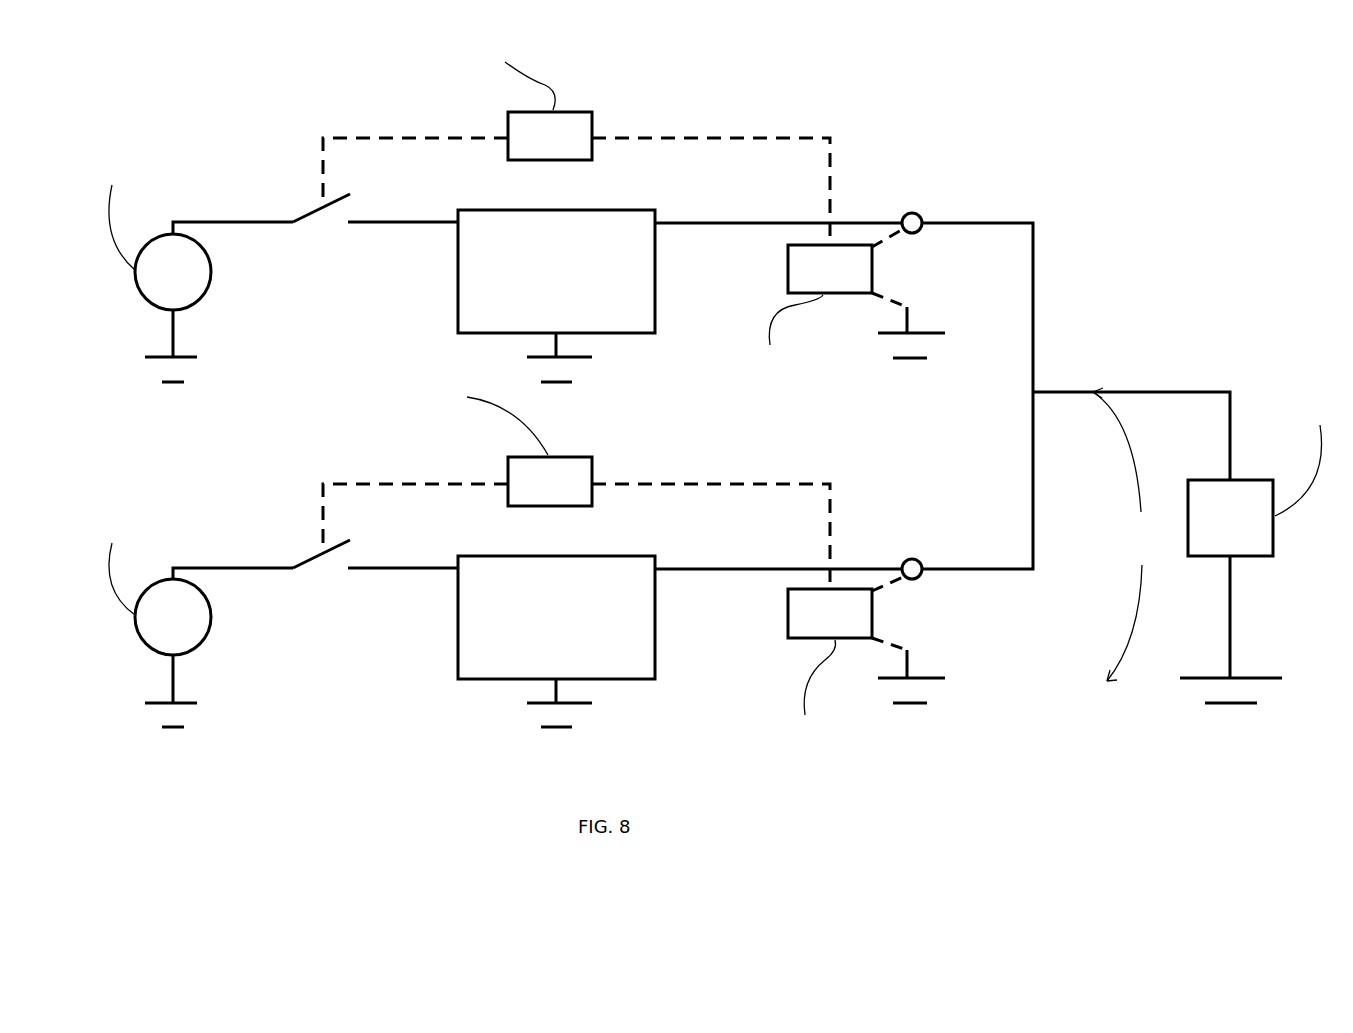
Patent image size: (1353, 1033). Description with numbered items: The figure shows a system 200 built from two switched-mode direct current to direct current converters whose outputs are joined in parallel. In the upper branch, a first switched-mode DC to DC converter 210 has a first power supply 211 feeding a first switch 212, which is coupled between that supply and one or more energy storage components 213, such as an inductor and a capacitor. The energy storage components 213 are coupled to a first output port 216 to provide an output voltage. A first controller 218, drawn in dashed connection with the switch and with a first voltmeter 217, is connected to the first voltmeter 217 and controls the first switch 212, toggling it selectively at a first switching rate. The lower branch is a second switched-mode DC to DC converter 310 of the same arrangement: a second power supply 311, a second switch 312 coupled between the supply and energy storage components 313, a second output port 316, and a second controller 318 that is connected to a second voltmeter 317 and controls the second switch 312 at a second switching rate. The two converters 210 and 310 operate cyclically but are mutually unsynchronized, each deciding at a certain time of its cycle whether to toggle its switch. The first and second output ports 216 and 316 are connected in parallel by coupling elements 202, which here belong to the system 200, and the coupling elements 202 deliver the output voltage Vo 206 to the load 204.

The system 200 is at (697, 410).
The coupling elements 202 is at (1035, 293).
The load 204 is at (1251, 551).
The output voltage Vo 206 is at (1124, 534).
The first switched-mode DC to DC converter 210 is at (510, 215).
The first power supply 211 is at (182, 266).
The first switch 212 is at (375, 221).
The energy storage components 213 is at (680, 296).
The first output port 216 is at (915, 213).
The first voltmeter 217 is at (848, 300).
The first controller 218 is at (576, 146).
The second switched-mode DC to DC converter 310 is at (510, 560).
The second power supply 311 is at (182, 618).
The second switch 312 is at (375, 567).
The energy storage components 313 is at (680, 641).
The second output port 316 is at (915, 560).
The second voltmeter 317 is at (862, 655).
The second controller 318 is at (576, 488).